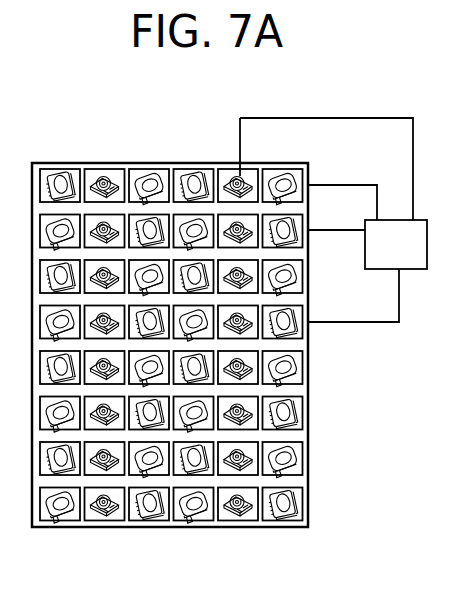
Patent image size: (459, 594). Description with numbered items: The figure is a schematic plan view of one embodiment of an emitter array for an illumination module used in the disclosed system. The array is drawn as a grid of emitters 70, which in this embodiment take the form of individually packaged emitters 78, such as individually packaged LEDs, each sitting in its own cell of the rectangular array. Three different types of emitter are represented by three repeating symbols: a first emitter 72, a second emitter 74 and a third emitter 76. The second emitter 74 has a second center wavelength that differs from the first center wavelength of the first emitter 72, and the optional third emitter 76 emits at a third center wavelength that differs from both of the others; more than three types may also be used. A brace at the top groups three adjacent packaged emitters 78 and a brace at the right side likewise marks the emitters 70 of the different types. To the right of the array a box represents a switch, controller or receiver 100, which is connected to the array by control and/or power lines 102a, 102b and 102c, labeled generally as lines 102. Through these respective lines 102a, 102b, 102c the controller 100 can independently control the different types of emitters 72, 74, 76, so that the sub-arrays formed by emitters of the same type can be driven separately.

The emitters 70 is at (230, 294).
The individually packaged emitters 78 is at (104, 133).
The third emitter 76 is at (107, 168).
The second emitter 74 is at (308, 457).
The first emitter 72 is at (308, 504).
The controller 100 is at (413, 256).
The control and/or power lines 102 is at (339, 214).
The control and/or power line 102a is at (333, 232).
The control and/or power line 102b is at (335, 184).
The control and/or power line 102c is at (271, 118).